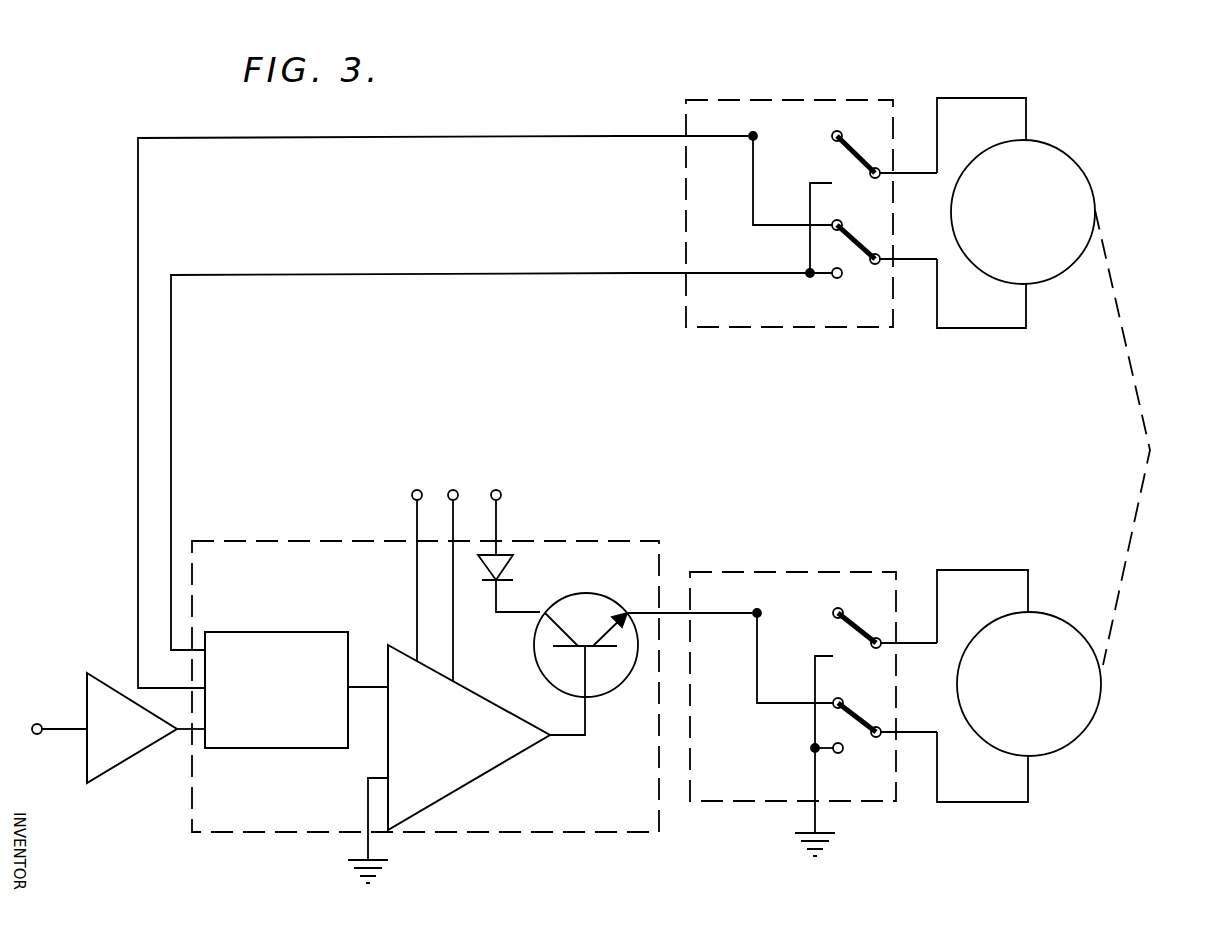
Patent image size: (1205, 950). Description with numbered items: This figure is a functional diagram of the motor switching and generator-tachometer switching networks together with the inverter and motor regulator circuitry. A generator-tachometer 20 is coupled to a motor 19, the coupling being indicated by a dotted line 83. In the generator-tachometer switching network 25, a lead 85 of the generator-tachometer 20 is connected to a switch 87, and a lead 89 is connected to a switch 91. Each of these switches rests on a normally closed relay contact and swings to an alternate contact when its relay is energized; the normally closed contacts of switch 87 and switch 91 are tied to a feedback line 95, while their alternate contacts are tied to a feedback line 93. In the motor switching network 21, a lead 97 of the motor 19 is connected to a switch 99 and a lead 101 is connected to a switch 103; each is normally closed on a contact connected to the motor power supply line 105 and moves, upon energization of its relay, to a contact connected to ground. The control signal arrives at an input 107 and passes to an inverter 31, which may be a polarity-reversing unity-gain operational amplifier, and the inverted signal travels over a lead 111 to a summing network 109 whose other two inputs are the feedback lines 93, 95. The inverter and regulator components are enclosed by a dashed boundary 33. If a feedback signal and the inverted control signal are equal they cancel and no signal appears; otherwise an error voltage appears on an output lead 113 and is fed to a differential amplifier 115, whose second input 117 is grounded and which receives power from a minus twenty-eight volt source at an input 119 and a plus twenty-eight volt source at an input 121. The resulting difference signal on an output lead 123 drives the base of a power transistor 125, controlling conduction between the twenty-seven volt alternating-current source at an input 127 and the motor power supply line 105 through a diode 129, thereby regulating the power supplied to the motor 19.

The motor 19 is at (1045, 613).
The generator-tachometer 20 is at (1055, 147).
The motor switching network 21 is at (735, 572).
The generator-tachometer switching network 25 is at (797, 100).
The inverter 31 is at (87, 672).
The control circuit 33 is at (268, 541).
The dotted line 83 is at (1145, 426).
The lead 85 is at (975, 98).
The switch 87 is at (862, 158).
The lead 89 is at (990, 328).
The switch 91 is at (884, 249).
The feedback line 93 is at (636, 274).
The feedback line 95 is at (620, 138).
The lead 97 is at (1005, 570).
The switch 99 is at (866, 632).
The lead 101 is at (950, 802).
The switch 103 is at (866, 718).
The motor power supply line 105 is at (675, 610).
The input 107 is at (50, 712).
The summing network 109 is at (285, 632).
The lead 111 is at (183, 733).
The output lead 113 is at (365, 685).
The differential amplifier 115 is at (472, 687).
The second input 117 is at (368, 775).
The input 119 is at (415, 488).
The input 121 is at (452, 489).
The output lead 123 is at (567, 735).
The power transistor 125 is at (590, 593).
The input 127 is at (500, 500).
The diode 129 is at (513, 558).